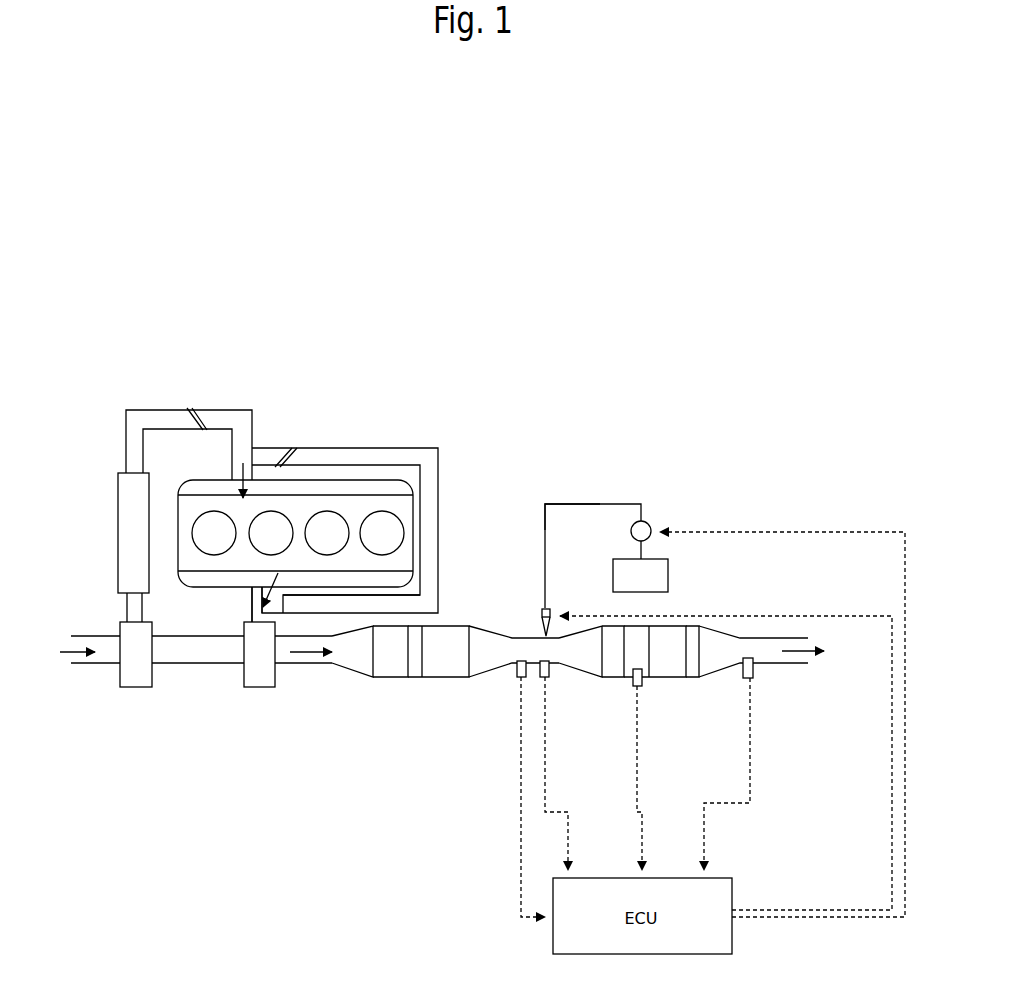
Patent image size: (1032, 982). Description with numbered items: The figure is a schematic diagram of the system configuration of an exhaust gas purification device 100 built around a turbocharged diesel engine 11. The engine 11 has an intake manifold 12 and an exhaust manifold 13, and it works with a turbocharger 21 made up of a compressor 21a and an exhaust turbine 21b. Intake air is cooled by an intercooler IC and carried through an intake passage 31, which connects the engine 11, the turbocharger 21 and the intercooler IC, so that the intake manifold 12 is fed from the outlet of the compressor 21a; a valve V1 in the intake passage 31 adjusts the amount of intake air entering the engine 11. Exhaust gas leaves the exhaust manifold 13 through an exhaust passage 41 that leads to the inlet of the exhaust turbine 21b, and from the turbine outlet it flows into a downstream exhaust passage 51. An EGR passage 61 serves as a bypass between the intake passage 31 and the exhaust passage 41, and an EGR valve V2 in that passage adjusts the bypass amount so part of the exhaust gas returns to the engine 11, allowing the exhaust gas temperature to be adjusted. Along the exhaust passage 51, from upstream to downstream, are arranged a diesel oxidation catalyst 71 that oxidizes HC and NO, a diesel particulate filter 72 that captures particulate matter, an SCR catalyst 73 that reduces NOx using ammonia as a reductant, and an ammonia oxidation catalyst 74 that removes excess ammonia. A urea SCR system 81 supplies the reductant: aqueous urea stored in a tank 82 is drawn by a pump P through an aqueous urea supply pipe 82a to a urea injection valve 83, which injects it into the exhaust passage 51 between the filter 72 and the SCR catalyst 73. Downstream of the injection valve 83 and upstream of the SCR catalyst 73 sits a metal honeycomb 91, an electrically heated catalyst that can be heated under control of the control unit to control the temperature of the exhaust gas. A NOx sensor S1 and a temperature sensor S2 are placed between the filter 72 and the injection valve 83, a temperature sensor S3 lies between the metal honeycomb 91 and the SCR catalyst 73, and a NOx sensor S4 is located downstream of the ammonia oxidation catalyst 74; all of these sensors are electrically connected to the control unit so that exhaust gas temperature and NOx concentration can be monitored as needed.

The exhaust gas purification device 100 is at (509, 420).
The engine 11 is at (348, 497).
The intake manifold 12 is at (403, 488).
The exhaust manifold 13 is at (403, 580).
The turbocharger 21 is at (197, 777).
The compressor 21a is at (133, 676).
The exhaust turbine 21b is at (260, 676).
The intake passage 31 is at (148, 420).
The valve V1 is at (196, 420).
The EGR valve V2 is at (275, 467).
The intercooler IC is at (122, 518).
The exhaust passage 41 is at (250, 603).
The exhaust passage 51 is at (314, 675).
The EGR passage 61 is at (408, 458).
The diesel oxidation catalyst 71 is at (390, 655).
The diesel particulate filter 72 is at (445, 657).
The SCR catalyst 73 is at (667, 655).
The ammonia oxidation catalyst 74 is at (692, 668).
The urea SCR system 81 is at (624, 481).
The tank 82 is at (655, 575).
The aqueous urea supply pipe 82a is at (575, 503).
The urea injection valve 83 is at (540, 610).
The pump P is at (645, 521).
The metal honeycomb 91 is at (611, 665).
The NOx sensor S1 is at (517, 675).
The temperature sensor S2 is at (547, 670).
The temperature sensor S3 is at (632, 685).
The NOx sensor S4 is at (753, 665).